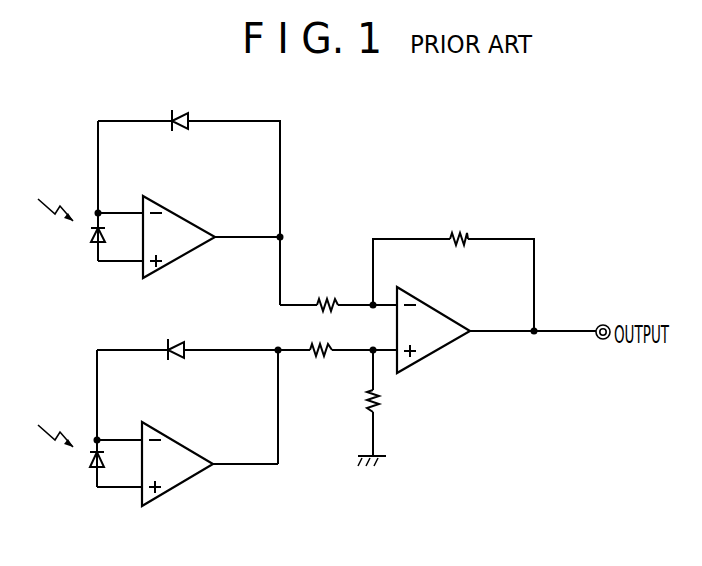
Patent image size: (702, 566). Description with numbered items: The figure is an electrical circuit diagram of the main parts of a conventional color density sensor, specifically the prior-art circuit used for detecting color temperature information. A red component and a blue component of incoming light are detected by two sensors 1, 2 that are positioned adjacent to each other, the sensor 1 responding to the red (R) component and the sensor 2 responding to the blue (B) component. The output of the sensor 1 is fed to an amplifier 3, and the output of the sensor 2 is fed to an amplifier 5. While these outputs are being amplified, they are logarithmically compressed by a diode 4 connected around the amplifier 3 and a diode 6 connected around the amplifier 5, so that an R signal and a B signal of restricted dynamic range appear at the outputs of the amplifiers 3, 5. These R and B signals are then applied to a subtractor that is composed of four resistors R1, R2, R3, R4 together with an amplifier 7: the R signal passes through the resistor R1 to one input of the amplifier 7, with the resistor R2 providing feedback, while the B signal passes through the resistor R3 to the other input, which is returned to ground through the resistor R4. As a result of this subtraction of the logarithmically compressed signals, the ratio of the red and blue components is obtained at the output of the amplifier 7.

The sensor 1 is at (104, 234).
The sensor 2 is at (103, 459).
The amplifier 3 is at (187, 216).
The diode 4 is at (176, 110).
The amplifier 5 is at (183, 443).
The diode 6 is at (171, 341).
The amplifier 7 is at (440, 312).
The resistor R1 is at (324, 298).
The resistor R2 is at (455, 233).
The resistor R3 is at (322, 358).
The resistor R4 is at (378, 401).